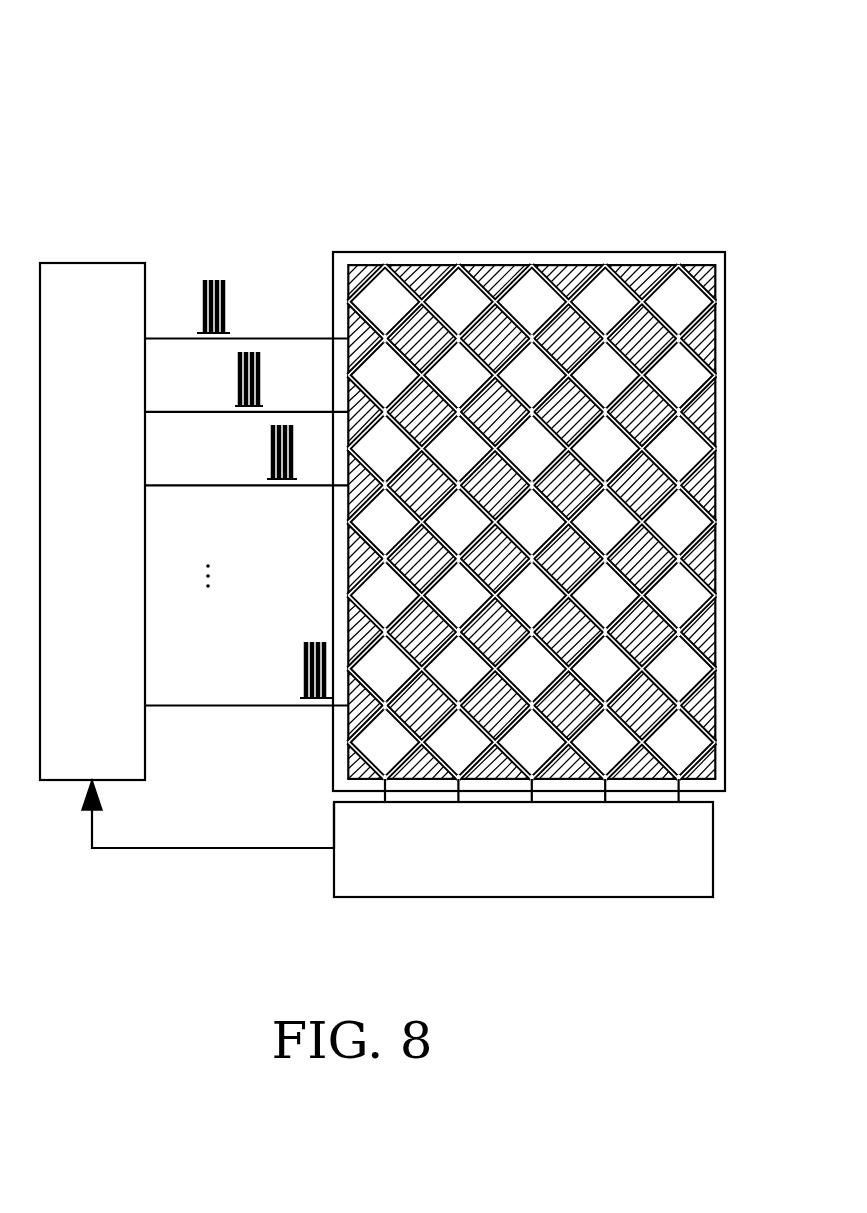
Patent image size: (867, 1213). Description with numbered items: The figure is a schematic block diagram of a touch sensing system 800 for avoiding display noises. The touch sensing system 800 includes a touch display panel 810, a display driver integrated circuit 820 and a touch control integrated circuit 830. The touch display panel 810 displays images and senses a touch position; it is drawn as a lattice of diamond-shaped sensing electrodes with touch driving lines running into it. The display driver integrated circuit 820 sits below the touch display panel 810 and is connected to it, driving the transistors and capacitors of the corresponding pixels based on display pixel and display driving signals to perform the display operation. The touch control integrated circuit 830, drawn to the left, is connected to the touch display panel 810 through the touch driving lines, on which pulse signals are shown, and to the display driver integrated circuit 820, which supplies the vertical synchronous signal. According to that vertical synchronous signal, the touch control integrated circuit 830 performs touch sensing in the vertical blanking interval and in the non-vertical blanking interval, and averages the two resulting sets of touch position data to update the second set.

The touch sensing system 800 is at (153, 58).
The touch display panel 810 is at (528, 252).
The display driver integrated circuit 820 is at (527, 897).
The touch control integrated circuit 830 is at (90, 263).